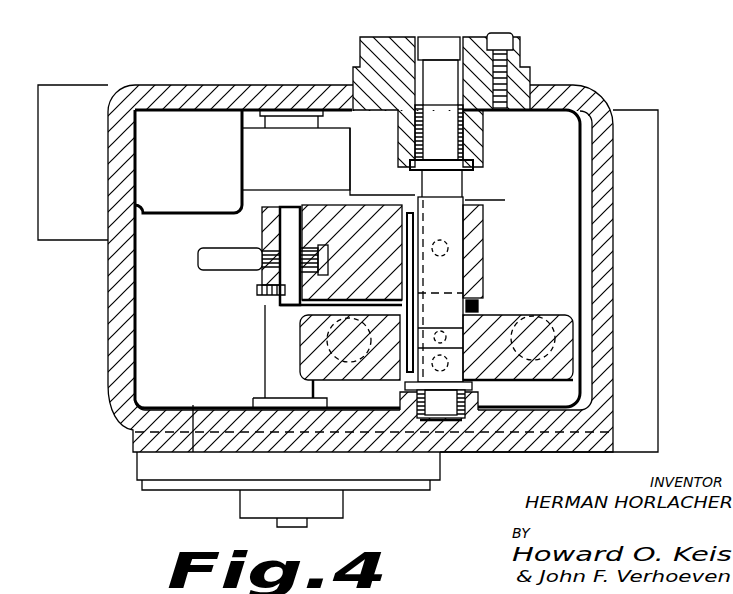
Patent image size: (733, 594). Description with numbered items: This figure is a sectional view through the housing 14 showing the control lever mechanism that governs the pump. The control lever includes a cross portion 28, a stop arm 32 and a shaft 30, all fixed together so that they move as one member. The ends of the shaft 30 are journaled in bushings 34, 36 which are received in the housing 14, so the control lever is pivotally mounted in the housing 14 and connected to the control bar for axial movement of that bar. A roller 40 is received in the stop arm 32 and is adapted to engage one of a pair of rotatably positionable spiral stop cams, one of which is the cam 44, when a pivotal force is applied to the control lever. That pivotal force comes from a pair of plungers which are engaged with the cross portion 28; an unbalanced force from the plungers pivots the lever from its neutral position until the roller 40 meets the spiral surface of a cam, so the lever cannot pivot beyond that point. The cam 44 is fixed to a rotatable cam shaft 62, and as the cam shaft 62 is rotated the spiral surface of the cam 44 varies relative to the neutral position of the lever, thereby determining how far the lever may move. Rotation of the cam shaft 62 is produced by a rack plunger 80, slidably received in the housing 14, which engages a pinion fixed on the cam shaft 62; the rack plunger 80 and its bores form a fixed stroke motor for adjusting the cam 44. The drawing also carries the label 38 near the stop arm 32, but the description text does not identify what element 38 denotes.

The housing 14 is at (528, 428).
The cross portion 28 is at (508, 364).
The shaft 30 is at (452, 286).
The stop arm 32 is at (375, 262).
The bushing 34 is at (466, 136).
The bushing 36 is at (467, 393).
The armature bar 38 is at (283, 206).
The roller 40 is at (262, 276).
The spiral stop cam 44 is at (236, 268).
The cam shaft 62 is at (293, 356).
The rack plunger 80 is at (298, 159).